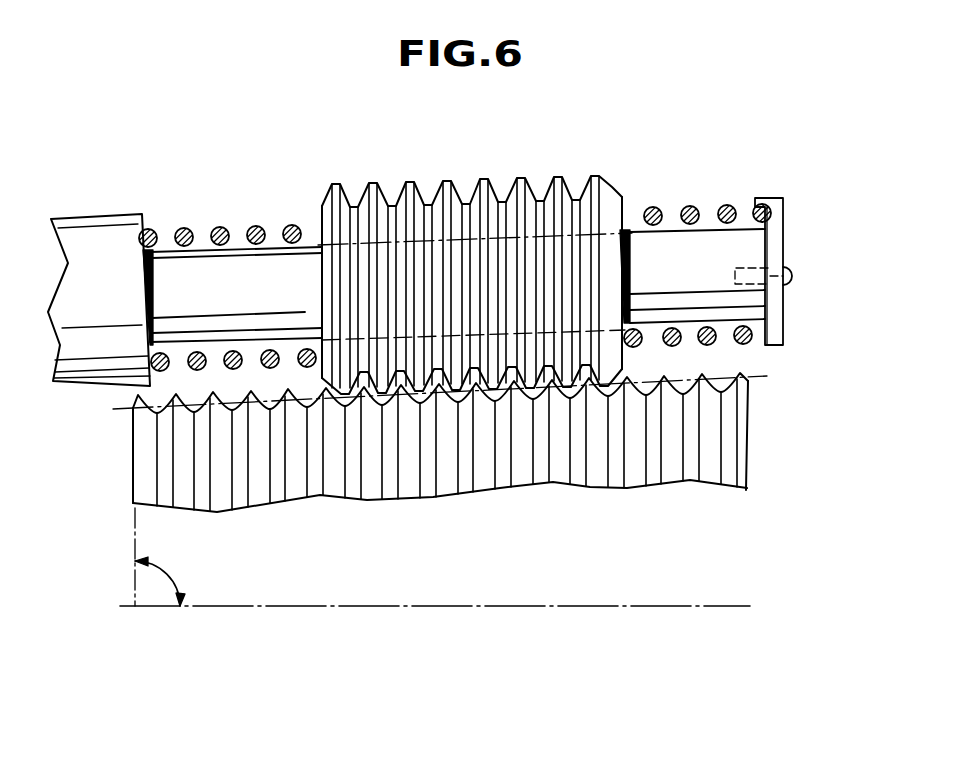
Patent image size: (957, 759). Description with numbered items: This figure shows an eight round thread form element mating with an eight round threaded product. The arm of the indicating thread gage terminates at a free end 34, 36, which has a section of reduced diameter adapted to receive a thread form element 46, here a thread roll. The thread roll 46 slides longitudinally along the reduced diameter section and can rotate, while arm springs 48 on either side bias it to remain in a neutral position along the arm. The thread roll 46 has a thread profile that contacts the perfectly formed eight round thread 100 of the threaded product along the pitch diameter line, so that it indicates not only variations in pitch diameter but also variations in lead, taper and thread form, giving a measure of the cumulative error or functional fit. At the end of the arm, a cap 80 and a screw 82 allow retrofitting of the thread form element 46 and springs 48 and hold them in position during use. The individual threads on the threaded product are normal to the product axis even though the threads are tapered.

The free end 34 is at (99, 248).
The free end 36 is at (100, 218).
The thread form element 46 is at (451, 178).
The arm springs 48 is at (250, 228).
The cap 80 is at (783, 224).
The screw 82 is at (797, 277).
The 8 round thread 100 is at (714, 456).